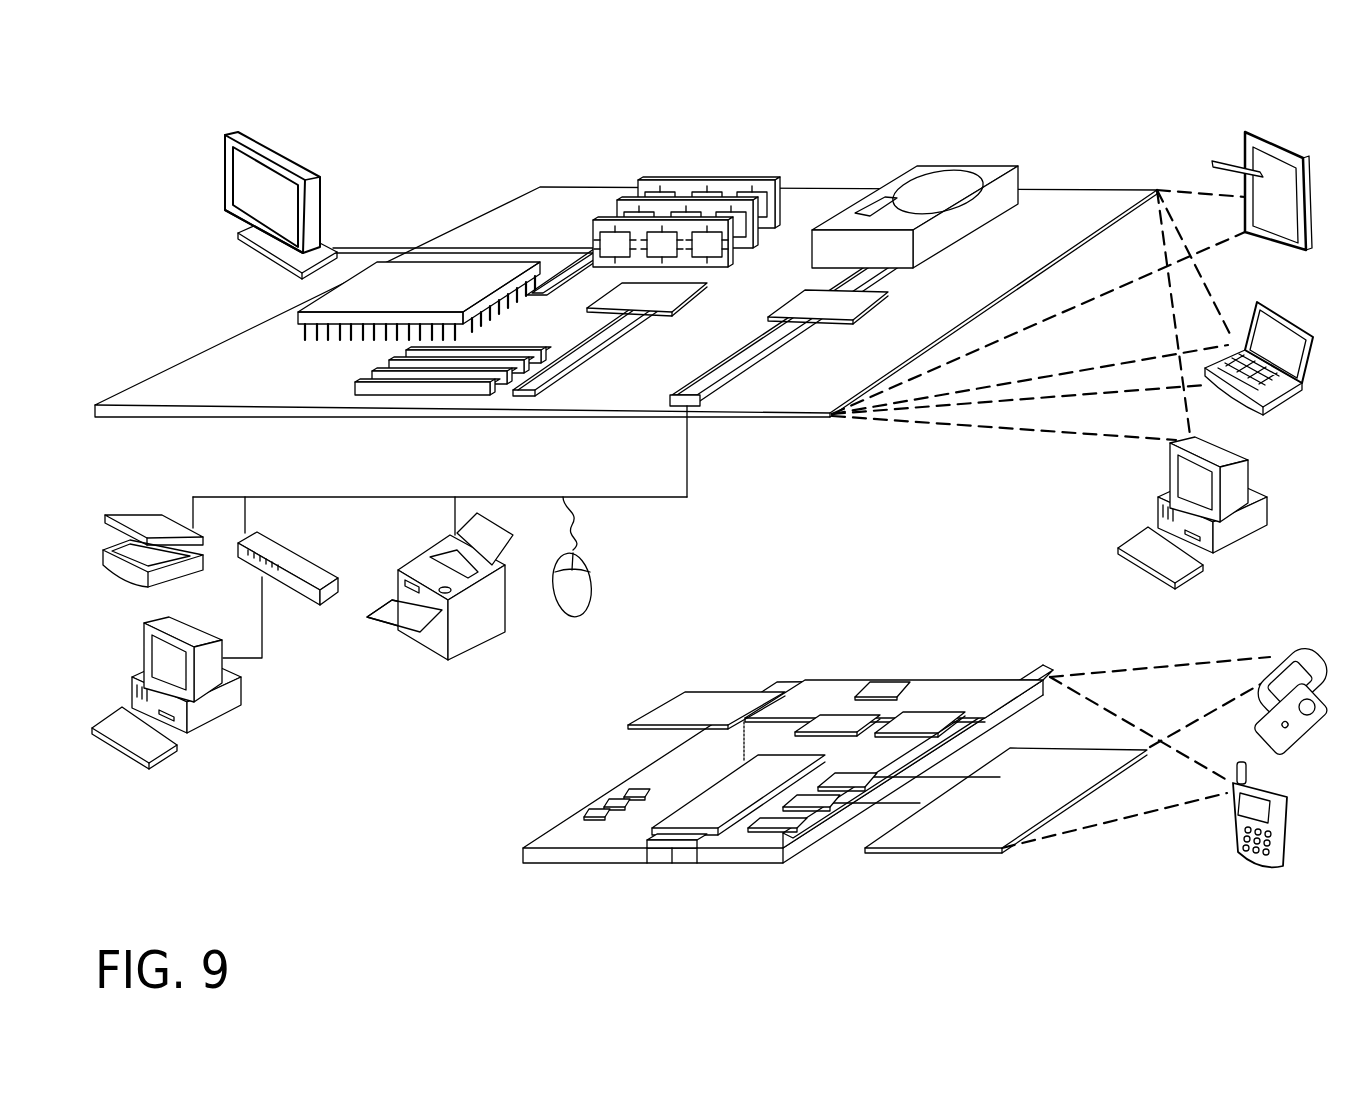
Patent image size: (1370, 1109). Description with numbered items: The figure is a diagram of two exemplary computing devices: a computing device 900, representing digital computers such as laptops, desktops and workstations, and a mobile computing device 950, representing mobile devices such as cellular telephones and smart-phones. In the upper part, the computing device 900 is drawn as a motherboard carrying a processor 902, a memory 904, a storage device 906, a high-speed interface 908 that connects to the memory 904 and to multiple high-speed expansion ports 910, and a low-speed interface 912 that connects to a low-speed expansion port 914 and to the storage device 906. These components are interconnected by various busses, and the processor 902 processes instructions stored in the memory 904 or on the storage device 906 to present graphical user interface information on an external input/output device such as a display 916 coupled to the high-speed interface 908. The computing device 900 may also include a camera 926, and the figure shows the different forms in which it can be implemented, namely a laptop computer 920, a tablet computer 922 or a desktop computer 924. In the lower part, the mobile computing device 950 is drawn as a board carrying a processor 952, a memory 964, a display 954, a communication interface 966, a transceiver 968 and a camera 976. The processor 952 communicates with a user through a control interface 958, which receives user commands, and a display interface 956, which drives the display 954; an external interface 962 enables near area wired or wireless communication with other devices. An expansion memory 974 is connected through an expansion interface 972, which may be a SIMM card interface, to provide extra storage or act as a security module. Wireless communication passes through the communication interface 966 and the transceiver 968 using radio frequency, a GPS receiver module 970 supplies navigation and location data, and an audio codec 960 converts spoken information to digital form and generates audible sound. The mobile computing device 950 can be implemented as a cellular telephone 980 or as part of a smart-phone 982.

The computing device 900 is at (438, 160).
The processor 902 is at (298, 312).
The memory 904 is at (650, 180).
The storage device 906 is at (908, 170).
The high-speed interface 908 is at (622, 300).
The high-speed expansion ports 910 is at (380, 384).
The low-speed interface 912 is at (808, 300).
The low-speed expansion port 914 is at (700, 408).
The display 916 is at (236, 134).
The laptop computer 920 is at (1262, 410).
The tablet computer 922 is at (1250, 152).
The desktop computer 924 is at (1160, 503).
The camera 926 is at (1275, 130).
The mobile computing device 950 is at (492, 862).
The processor 952 is at (710, 815).
The display 954 is at (975, 835).
The display interface 956 is at (785, 822).
The control interface 958 is at (820, 803).
The audio codec 960 is at (848, 783).
The external interface 962 is at (674, 853).
The memory 964 is at (610, 812).
The communication interface 966 is at (838, 718).
The transceiver 968 is at (920, 718).
The GPS receiver module 970 is at (890, 684).
The expansion interface 972 is at (767, 692).
The expansion memory 974 is at (690, 695).
The camera 976 is at (1262, 790).
The cellular telephone 980 is at (1290, 650).
The smart-phone 982 is at (1237, 835).